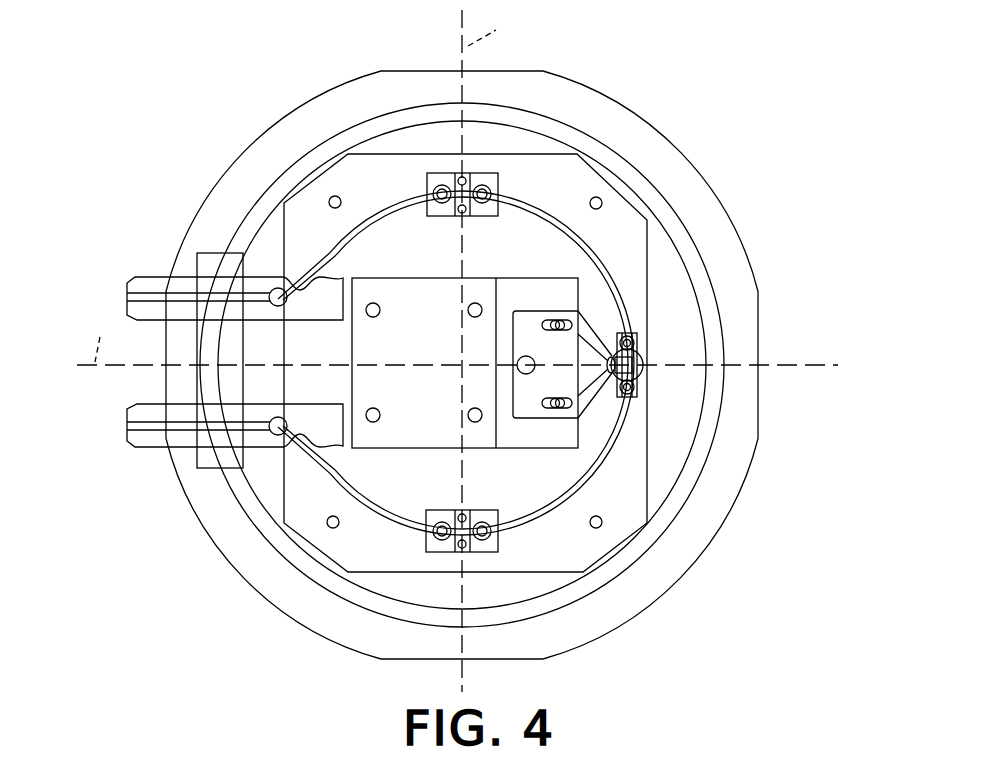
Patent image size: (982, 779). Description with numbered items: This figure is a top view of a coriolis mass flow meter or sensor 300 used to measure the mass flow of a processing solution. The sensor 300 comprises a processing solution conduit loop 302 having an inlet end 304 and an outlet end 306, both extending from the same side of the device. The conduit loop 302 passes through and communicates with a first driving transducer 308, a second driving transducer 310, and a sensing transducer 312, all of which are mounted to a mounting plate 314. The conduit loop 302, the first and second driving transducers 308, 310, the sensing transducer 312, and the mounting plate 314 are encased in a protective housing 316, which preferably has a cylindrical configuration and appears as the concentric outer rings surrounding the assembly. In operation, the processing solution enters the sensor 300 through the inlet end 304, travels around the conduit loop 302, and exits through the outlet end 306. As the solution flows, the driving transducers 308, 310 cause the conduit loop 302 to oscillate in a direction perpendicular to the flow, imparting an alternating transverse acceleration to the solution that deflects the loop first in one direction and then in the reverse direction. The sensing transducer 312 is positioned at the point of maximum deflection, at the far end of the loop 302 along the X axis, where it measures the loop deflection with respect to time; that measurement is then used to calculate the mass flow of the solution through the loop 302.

The coriolis mass flow meter 300 is at (778, 496).
The processing solution conduit loop 302 is at (614, 296).
The inlet end 304 is at (143, 428).
The outlet end 306 is at (138, 295).
The first driving transducer 308 is at (483, 547).
The second driving transducer 310 is at (490, 185).
The sensing transducer 312 is at (643, 372).
The mounting plate 314 is at (628, 510).
The protective housing 316 is at (690, 184).